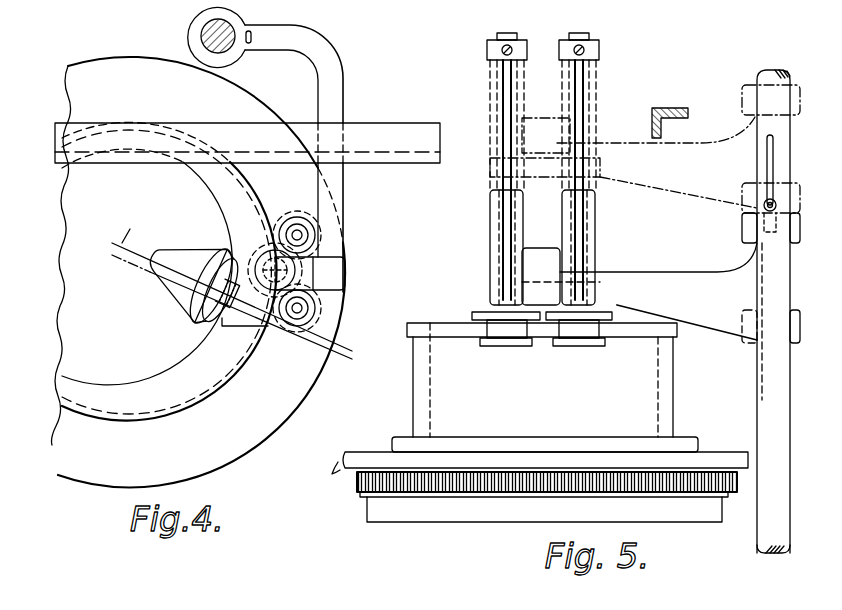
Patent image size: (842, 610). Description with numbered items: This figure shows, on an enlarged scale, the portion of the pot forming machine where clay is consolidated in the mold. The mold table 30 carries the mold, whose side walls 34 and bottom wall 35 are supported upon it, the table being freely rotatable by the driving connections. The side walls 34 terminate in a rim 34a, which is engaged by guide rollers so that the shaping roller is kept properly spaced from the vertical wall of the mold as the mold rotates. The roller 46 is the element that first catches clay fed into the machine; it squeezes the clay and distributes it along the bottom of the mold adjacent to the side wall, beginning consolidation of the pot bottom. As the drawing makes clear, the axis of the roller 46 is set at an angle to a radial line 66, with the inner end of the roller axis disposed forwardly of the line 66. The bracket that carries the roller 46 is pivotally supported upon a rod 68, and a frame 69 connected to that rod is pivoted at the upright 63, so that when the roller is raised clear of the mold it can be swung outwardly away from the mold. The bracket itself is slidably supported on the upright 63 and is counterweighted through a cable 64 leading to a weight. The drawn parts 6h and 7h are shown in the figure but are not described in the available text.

In FIG. 4, the mold table 30 is at (216, 451).
In FIG. 5, the mold table 30 is at (343, 470).
In FIG. 4, the side walls of the mold 34 is at (196, 393).
In FIG. 5, the side walls of the mold 34 is at (413, 378).
In FIG. 4, the rim of the mold 34a is at (148, 409).
In FIG. 5, the rim of the mold 34a is at (440, 323).
In FIG. 5, the bottom wall of the mold 35 is at (407, 437).
In FIG. 4, the roller 46 is at (185, 257).
In FIG. 4, the upright 63 is at (201, 35).
In FIG. 5, the upright 63 is at (757, 378).
In FIG. 5, the cable 64 is at (767, 162).
In FIG. 4, the radial line 66 is at (137, 268).
In FIG. 4, the rod 68 is at (262, 261).
In FIG. 4, the frame 69 is at (346, 190).
In FIG. 5, the frame 69 is at (645, 272).
In FIG. 4, the roller arm 6h is at (344, 276).
In FIG. 5, the roller arm 6h is at (492, 292).
In FIG. 4, the rollers 7h is at (294, 210).
In FIG. 5, the rollers 7h is at (568, 343).